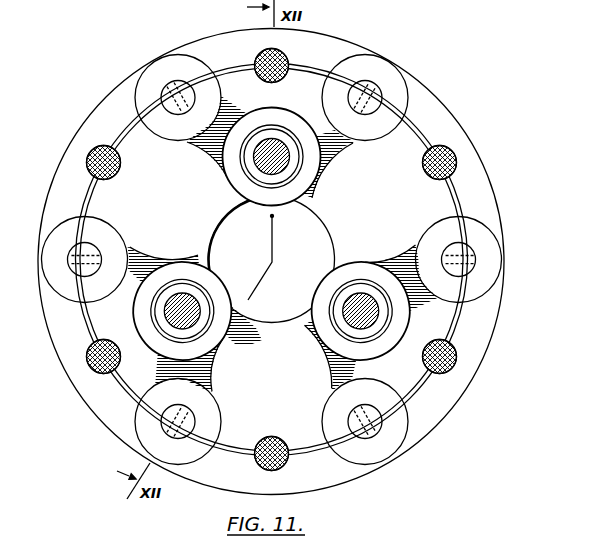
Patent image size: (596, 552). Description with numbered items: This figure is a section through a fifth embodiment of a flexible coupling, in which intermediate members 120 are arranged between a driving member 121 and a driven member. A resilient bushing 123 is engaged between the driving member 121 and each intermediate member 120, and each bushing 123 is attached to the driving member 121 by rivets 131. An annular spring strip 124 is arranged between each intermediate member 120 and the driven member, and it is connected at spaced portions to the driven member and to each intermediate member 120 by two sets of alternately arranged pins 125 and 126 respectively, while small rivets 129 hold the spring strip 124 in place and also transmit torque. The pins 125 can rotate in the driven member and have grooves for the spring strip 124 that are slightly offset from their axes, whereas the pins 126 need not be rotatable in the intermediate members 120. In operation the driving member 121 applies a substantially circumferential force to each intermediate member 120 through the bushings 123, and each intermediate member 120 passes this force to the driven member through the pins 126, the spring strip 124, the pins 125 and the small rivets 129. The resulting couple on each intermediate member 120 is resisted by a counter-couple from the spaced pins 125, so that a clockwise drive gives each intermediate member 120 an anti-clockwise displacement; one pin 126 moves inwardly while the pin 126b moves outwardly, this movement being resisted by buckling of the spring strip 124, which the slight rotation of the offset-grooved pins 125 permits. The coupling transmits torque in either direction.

The intermediate member 120 is at (349, 143).
The driving member 121 is at (454, 130).
The resilient bushing 123 is at (250, 168).
The annular spring strip 124 is at (453, 192).
The pin 125 is at (95, 173).
The pin 126 is at (67, 276).
The pin 126b is at (168, 90).
The small rivet 129 is at (93, 143).
The rivet 131 is at (278, 168).